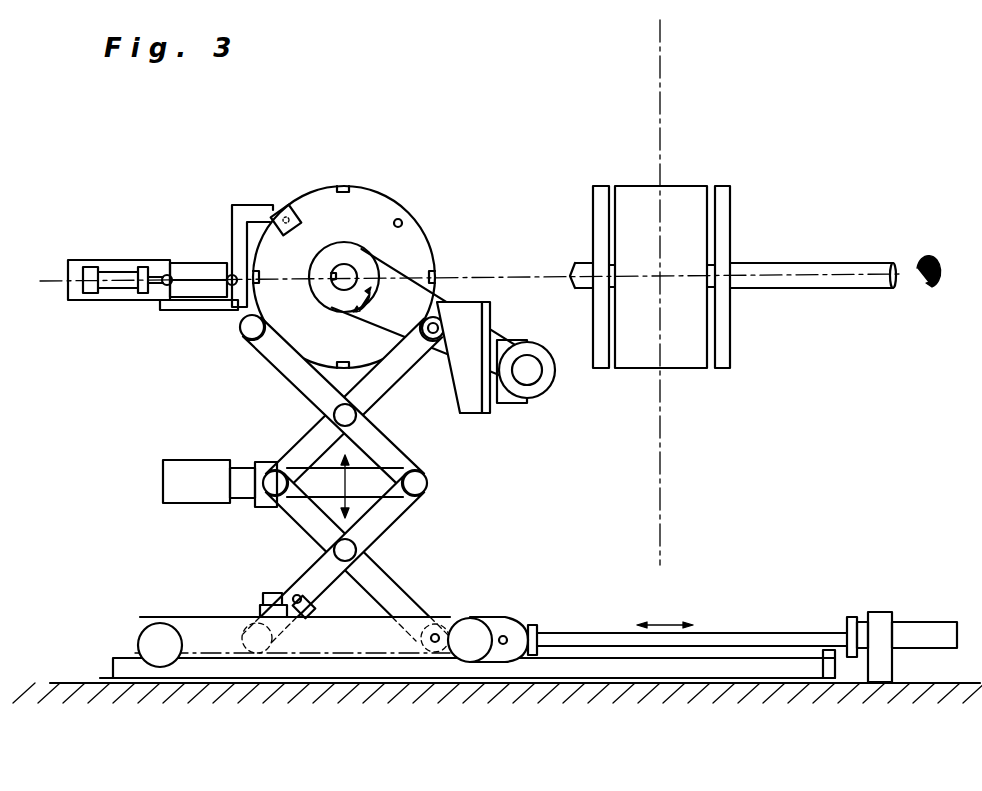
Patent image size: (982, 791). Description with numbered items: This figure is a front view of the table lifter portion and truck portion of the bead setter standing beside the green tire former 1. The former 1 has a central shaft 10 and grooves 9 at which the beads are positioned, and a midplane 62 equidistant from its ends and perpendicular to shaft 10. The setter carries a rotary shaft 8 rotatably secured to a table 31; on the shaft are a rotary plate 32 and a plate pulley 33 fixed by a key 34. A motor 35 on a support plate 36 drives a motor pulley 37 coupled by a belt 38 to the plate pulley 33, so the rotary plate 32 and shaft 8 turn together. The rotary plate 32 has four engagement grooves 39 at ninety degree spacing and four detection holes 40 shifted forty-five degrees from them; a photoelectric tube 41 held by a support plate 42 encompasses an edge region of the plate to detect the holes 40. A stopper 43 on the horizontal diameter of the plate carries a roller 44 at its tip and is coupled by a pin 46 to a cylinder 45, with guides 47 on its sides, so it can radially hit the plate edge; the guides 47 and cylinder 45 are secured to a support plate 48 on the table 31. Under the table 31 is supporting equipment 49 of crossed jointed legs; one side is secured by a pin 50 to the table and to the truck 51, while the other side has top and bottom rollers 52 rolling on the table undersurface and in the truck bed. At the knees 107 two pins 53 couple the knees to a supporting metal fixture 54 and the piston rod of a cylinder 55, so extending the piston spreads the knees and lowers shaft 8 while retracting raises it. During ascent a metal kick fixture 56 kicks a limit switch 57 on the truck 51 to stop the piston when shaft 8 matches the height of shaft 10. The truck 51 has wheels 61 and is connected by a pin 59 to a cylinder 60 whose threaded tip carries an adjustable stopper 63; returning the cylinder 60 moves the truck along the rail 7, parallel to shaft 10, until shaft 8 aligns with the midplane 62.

The green tire former 1 is at (725, 372).
The rail 7 is at (620, 640).
The rotary shaft 8 is at (350, 270).
The grooves 9 is at (712, 186).
The central shaft 10 is at (790, 262).
The table 31 is at (190, 312).
The rotary plate 32 is at (427, 232).
The plate pulley 33 is at (327, 247).
The key 34 is at (333, 267).
The motor 35 is at (556, 392).
The support plate 36 is at (490, 412).
The motor pulley 37 is at (553, 347).
The belt 38 is at (494, 408).
The engagement grooves 39 is at (442, 276).
The detection holes 40 is at (290, 212).
The photoelectric tube 41 is at (283, 206).
The support plate 42 is at (243, 312).
The stopper 43 is at (220, 263).
The roller 44 is at (233, 273).
The cylinder 45 is at (125, 262).
The pin 46 is at (158, 270).
The guides 47 is at (150, 300).
The support plate 48 is at (110, 300).
The supporting equipment 49 is at (408, 447).
The pin 50 is at (428, 345).
The truck 51 is at (178, 620).
The rollers 52 is at (258, 340).
The pins 53 is at (290, 495).
The supporting metal fixture 54 is at (248, 505).
The cylinder 55 is at (162, 488).
The metal kick fixture 56 is at (310, 612).
The limit switch 57 is at (297, 605).
The pin 59 is at (506, 635).
The cylinder 60 is at (915, 622).
The wheels 61 is at (478, 617).
The midplane 62 is at (665, 410).
The stopper 63 is at (850, 620).
The knees 107 is at (256, 480).